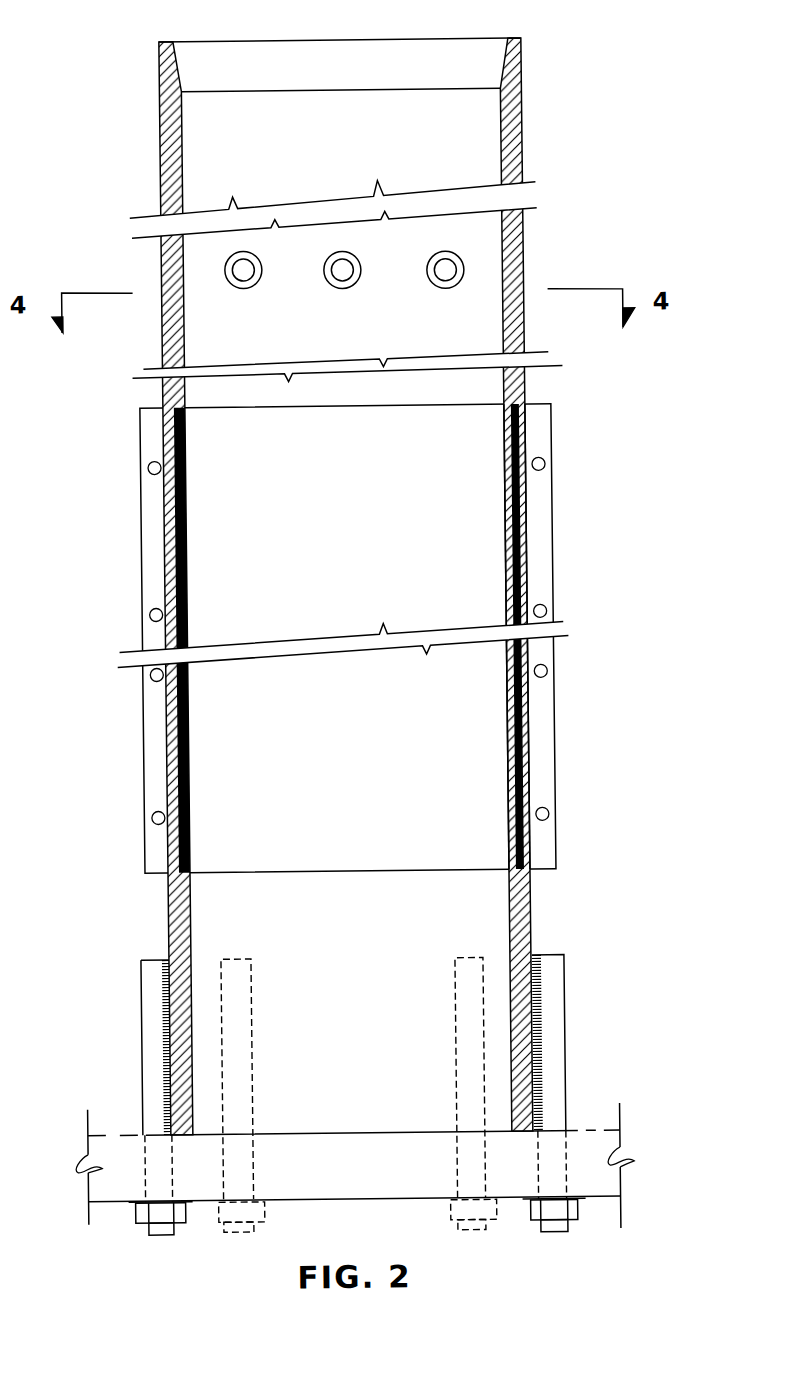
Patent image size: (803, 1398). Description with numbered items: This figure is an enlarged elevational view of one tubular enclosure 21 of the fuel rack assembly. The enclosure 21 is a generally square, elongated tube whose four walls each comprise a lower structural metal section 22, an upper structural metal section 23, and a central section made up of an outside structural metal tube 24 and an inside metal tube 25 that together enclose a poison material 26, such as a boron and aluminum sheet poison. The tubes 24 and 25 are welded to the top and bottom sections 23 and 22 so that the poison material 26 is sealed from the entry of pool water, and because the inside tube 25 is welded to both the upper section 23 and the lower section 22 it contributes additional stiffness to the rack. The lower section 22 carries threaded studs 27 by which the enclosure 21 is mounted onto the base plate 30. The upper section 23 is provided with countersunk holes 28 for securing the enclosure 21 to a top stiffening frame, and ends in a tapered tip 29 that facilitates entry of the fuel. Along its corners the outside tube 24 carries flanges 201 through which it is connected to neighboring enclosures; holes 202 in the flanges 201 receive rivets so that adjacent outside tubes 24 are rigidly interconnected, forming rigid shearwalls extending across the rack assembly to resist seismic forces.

The tubular enclosure 21 is at (351, 29).
The lower structural metal section 22 is at (531, 942).
The upper structural metal section 23 is at (527, 152).
The outside structural metal tube 24 is at (535, 809).
The inside metal tube 25 is at (509, 845).
The poison material 26 is at (536, 845).
The threaded studs 27 is at (561, 1100).
The countersunk holes 28 is at (442, 257).
The tapered tip 29 is at (181, 69).
The base plate 30 is at (334, 1200).
The flanges 201 is at (151, 769).
The holes 202 is at (545, 470).